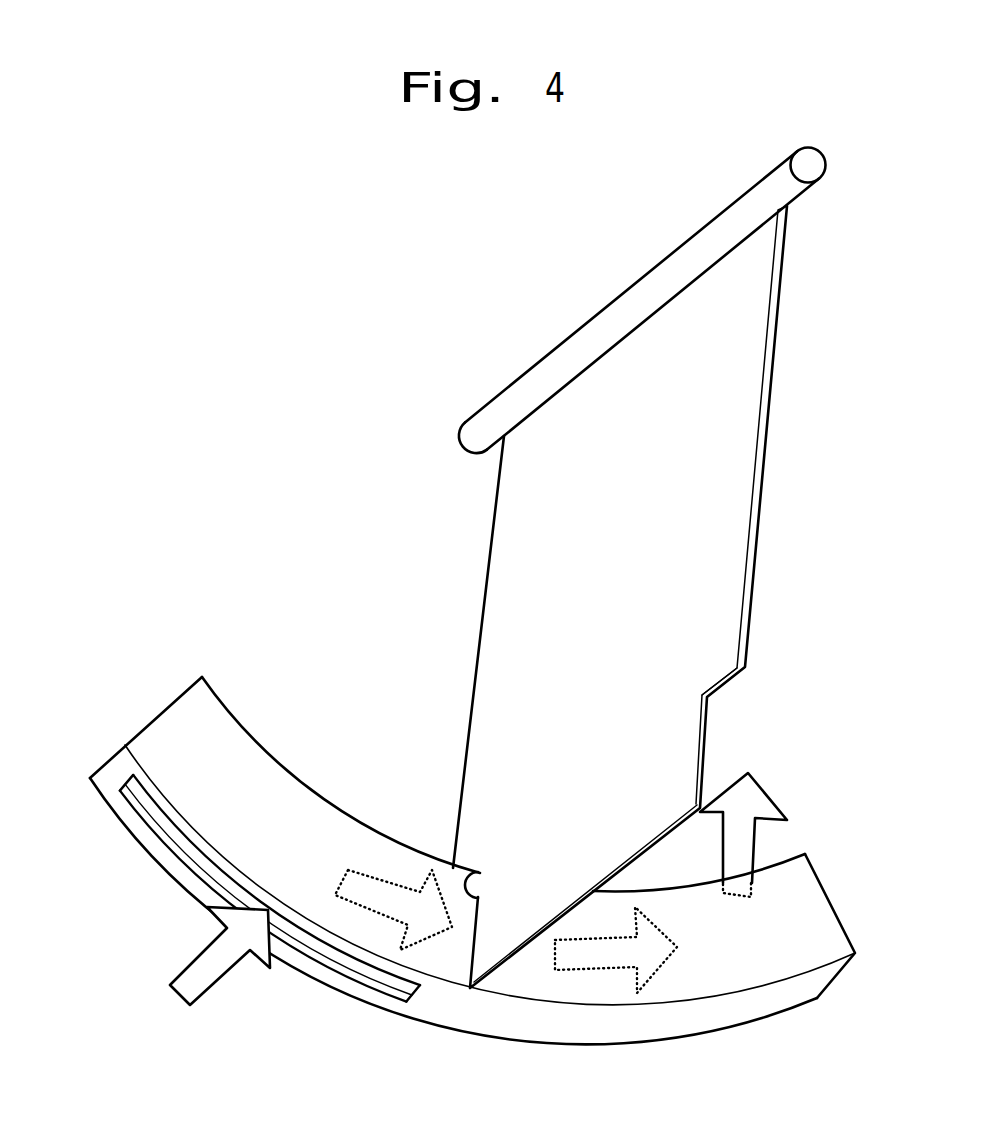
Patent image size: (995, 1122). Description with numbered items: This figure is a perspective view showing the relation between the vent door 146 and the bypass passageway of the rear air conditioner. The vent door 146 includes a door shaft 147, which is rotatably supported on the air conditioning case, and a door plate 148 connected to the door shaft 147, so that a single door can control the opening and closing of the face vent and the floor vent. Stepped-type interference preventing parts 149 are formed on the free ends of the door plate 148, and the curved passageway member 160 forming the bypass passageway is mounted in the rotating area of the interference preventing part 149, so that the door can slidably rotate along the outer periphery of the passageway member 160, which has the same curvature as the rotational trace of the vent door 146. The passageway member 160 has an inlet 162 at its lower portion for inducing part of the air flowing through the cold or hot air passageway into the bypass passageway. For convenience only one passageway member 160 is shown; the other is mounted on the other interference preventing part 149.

The vent door 146 is at (490, 533).
The door shaft 147 is at (572, 340).
The door plate 148 is at (759, 468).
The interference preventing part 149 is at (470, 870).
The passageway member 160 is at (188, 687).
The inlet 162 is at (177, 840).